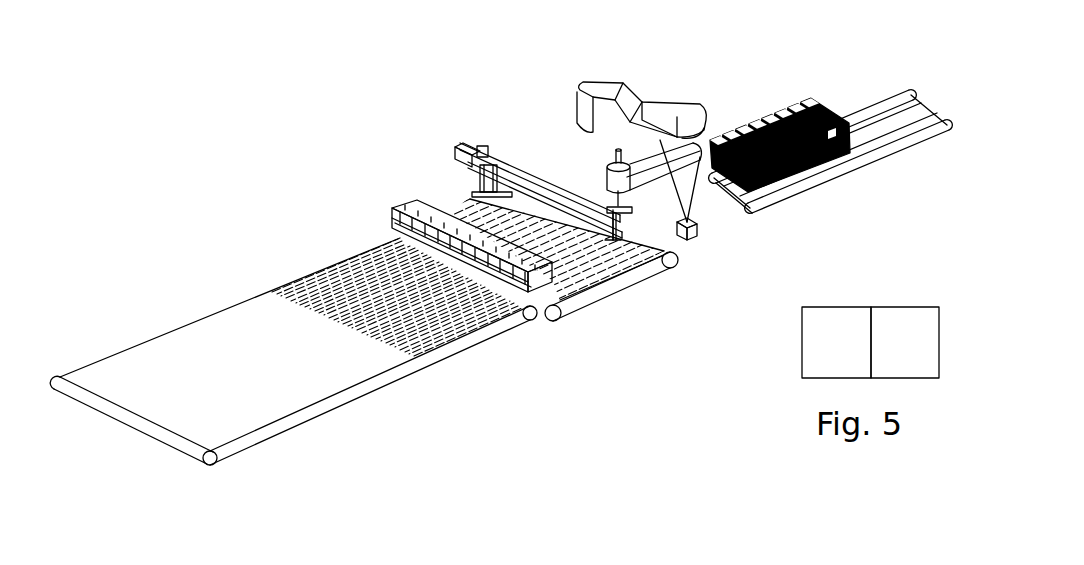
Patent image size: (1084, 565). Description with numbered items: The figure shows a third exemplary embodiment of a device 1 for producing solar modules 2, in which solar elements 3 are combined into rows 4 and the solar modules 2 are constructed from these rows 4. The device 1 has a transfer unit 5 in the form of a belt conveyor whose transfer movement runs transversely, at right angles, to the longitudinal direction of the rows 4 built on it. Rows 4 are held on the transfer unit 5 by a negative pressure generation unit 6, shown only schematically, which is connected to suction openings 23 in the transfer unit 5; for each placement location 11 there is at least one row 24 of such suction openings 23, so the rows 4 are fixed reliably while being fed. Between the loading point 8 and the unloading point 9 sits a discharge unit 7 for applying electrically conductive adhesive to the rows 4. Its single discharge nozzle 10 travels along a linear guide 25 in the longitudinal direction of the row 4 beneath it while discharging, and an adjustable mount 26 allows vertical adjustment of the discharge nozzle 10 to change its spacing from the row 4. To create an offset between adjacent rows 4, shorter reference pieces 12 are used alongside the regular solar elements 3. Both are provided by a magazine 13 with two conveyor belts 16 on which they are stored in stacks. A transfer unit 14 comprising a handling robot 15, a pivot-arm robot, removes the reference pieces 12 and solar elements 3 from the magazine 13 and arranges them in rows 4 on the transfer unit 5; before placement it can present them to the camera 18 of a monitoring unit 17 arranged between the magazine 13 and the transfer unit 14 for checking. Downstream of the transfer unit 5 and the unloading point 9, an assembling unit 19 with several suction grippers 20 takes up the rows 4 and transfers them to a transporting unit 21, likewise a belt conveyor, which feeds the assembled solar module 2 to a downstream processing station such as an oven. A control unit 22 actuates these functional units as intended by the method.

The device 1 is at (294, 134).
The solar module 2 is at (301, 281).
The solar element 3 is at (805, 115).
The row 4 is at (518, 272).
The transfer unit 5 is at (585, 302).
The negative pressure generation unit 6 is at (836, 342).
The discharge unit 7 is at (473, 150).
The loading point 8 is at (540, 157).
The unloading point 9 is at (462, 205).
The discharge nozzle 10 is at (503, 144).
The placement location 11 is at (561, 219).
The reference piece 12 is at (838, 130).
The magazine 13 is at (737, 181).
The transfer unit 14 is at (597, 83).
The handling robot 15 is at (668, 115).
The conveyor belt 16 is at (878, 92).
The monitoring unit 17 is at (691, 255).
The camera 18 is at (700, 232).
The assembling unit 19 is at (446, 188).
The gripper 20 is at (424, 220).
The transporting unit 21 is at (293, 322).
The control unit 22 is at (905, 342).
The suction opening 23 is at (584, 317).
The row of suction openings 24 is at (568, 269).
The linear guide 25 is at (521, 151).
The adjustable mount 26 is at (483, 111).